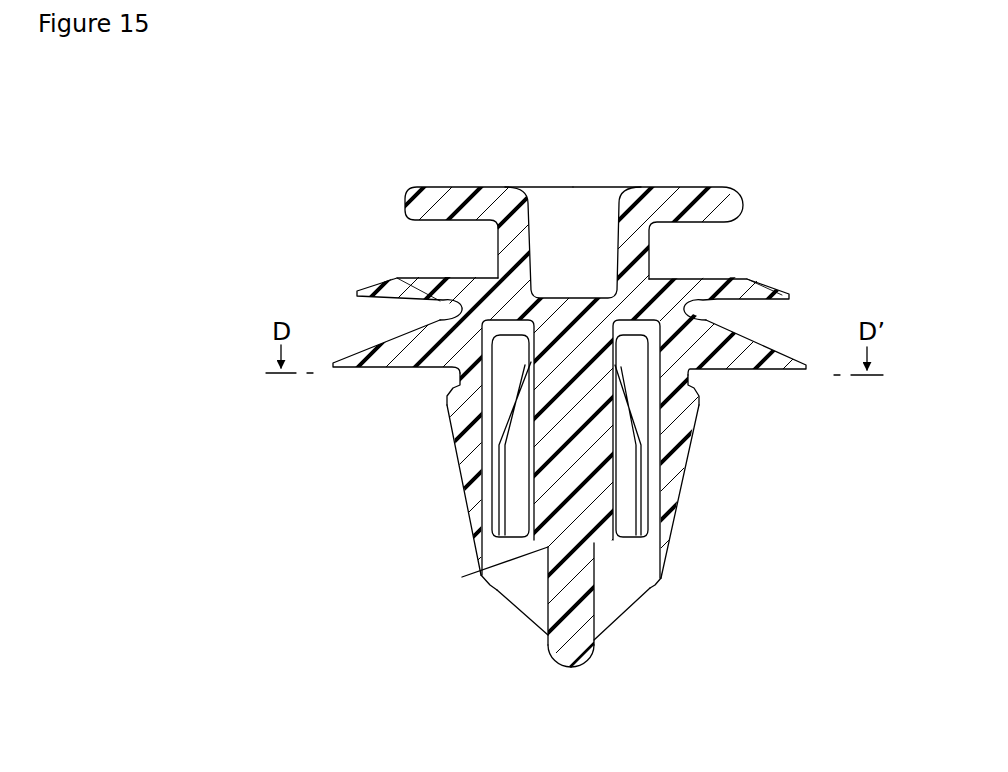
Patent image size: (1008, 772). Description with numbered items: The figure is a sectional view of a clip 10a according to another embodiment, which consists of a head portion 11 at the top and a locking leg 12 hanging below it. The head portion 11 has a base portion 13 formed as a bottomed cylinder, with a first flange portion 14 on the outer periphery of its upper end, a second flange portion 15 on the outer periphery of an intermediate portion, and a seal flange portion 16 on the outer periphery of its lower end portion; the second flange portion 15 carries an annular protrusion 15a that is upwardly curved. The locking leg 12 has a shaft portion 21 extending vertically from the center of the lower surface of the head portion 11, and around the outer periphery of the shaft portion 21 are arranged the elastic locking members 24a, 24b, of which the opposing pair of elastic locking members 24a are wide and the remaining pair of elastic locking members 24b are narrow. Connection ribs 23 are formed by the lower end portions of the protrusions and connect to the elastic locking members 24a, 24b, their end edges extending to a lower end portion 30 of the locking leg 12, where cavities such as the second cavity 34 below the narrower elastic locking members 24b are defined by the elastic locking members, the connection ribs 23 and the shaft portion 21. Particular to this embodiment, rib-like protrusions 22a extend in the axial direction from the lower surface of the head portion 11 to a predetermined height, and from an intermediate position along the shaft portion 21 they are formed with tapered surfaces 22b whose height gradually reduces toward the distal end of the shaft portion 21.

The clip 10a is at (748, 172).
The head portion 11 is at (755, 242).
The locking leg 12 is at (709, 629).
The base portion 13 is at (497, 247).
The first flange portion 14 is at (407, 207).
The second flange portion 15 is at (360, 288).
The annular protrusion 15a is at (748, 281).
The seal flange portion 16 is at (768, 346).
The shaft portion 21 is at (572, 483).
The rib-like protrusion 22a is at (545, 400).
The tapered surface 22b is at (475, 570).
The connection rib 23 is at (525, 598).
The elastic locking member 24a is at (518, 494).
The elastic locking member 24b is at (463, 450).
The lower end portion 30 is at (575, 665).
The second cavity 34 is at (608, 621).